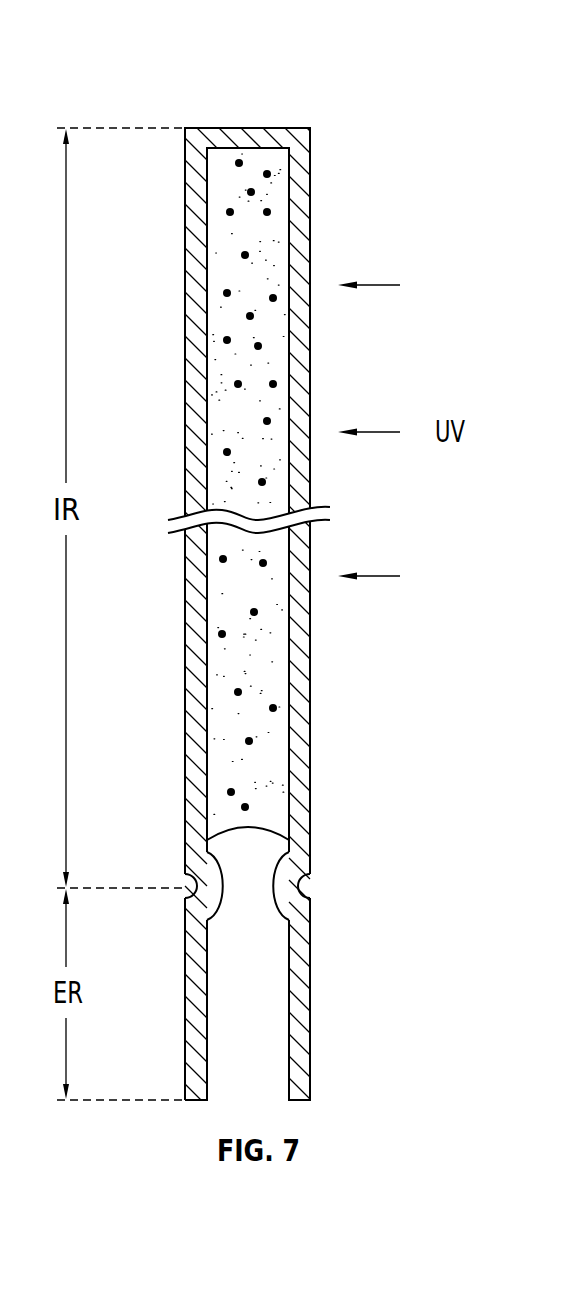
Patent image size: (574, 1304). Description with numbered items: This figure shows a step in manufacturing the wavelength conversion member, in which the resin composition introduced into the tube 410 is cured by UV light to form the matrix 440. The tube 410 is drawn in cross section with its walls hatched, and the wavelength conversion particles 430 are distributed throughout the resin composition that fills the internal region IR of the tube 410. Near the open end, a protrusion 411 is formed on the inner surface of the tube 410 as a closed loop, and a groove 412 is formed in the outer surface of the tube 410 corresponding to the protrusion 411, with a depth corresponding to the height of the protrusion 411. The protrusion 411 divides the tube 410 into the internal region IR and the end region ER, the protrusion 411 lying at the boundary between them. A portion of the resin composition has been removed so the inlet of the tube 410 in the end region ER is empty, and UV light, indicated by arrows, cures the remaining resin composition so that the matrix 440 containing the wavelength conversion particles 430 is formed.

The tube 410 is at (242, 98).
The protrusion 411 is at (276, 884).
The groove 412 is at (303, 890).
The wavelength conversion particles 430 is at (277, 385).
The matrix 440 is at (277, 343).